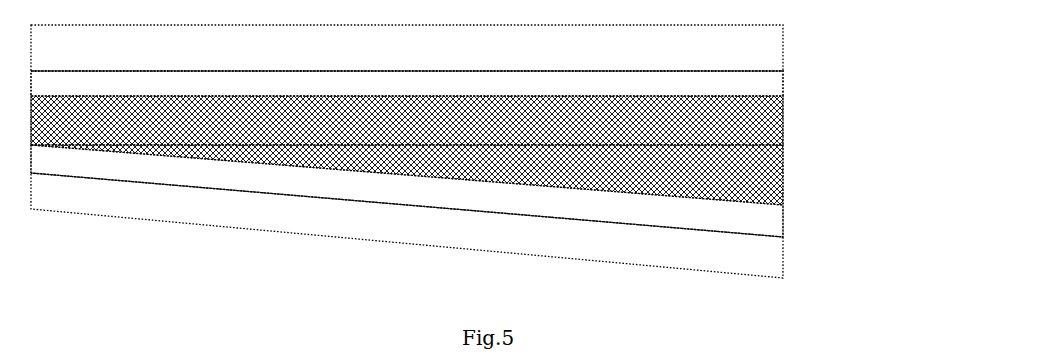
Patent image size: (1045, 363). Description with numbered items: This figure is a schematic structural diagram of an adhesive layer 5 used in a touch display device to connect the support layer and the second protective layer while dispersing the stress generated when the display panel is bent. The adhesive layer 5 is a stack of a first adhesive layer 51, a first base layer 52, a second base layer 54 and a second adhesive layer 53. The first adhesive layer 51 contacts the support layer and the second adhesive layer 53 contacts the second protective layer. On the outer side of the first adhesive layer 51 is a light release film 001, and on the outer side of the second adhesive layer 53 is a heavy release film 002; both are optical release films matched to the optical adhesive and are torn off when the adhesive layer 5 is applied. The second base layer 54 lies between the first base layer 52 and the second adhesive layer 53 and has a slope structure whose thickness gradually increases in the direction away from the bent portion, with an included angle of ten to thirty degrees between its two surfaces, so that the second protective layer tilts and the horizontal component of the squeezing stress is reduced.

The light release film 001 is at (714, 48).
The heavy release film 002 is at (712, 256).
The adhesive layer 5 is at (912, 80).
The first adhesive layer 51 is at (713, 84).
The first base layer 52 is at (783, 122).
The second adhesive layer 53 is at (713, 220).
The second base layer 54 is at (783, 174).